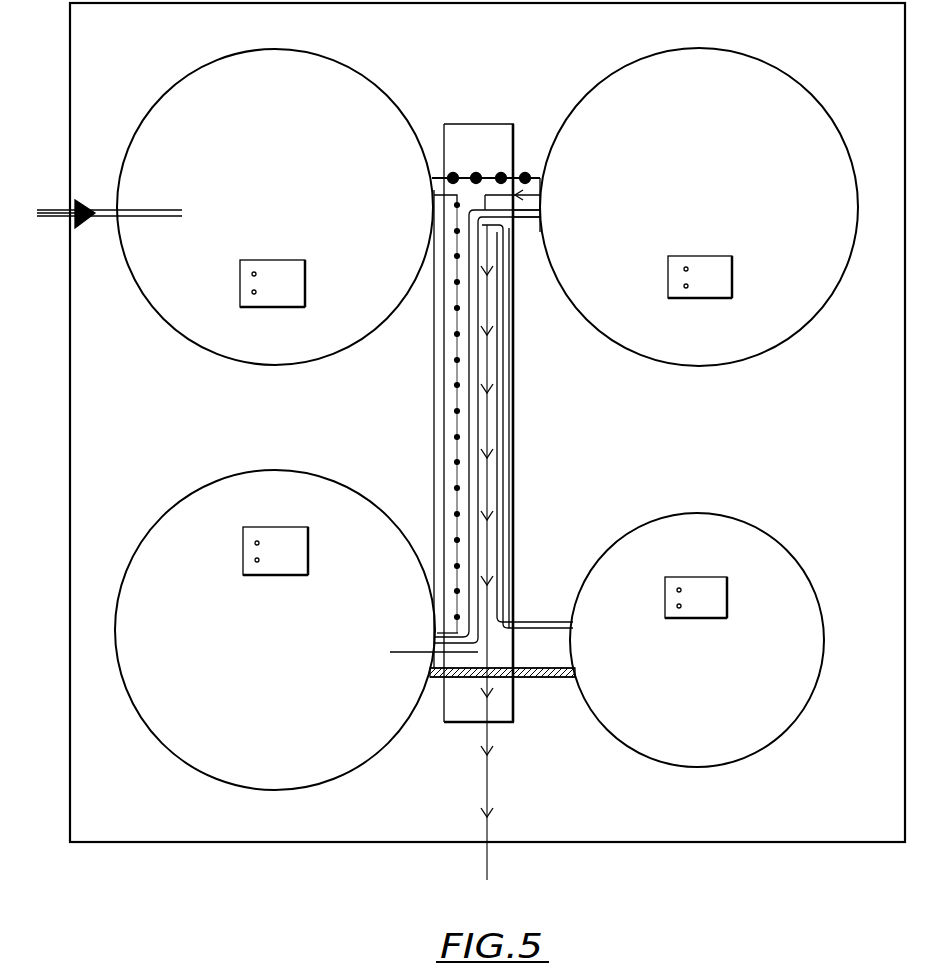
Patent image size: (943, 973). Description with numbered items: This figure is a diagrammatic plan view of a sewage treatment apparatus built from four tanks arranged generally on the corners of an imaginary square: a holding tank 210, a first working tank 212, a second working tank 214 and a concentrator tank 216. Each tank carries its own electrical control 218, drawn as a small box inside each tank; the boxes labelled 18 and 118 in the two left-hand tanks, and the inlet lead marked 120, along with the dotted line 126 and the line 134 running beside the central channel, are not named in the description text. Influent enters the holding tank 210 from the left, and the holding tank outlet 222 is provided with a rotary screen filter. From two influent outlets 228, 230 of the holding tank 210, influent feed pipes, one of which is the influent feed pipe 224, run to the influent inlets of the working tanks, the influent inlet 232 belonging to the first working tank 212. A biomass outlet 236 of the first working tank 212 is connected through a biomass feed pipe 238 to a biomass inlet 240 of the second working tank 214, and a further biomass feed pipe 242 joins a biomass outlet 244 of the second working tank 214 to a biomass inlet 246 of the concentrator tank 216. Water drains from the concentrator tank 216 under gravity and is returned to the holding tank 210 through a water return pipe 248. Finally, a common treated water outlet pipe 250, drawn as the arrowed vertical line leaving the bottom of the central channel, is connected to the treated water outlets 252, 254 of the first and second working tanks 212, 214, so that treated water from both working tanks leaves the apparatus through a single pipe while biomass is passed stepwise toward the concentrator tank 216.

The sensor 18 is at (300, 290).
The sensor 118 is at (300, 558).
The inlet conduit 120 is at (98, 218).
The dotted flow line 126 is at (457, 374).
The flow path 134 is at (437, 630).
The holding tank 210 is at (205, 352).
The first working tank 212 is at (782, 322).
The second working tank 214 is at (190, 758).
The concentrator tank 216 is at (770, 733).
The electrical control 218 is at (720, 275).
The outlet 222 is at (181, 208).
The influent feed pipe 224 is at (488, 190).
The influent outlet 228 is at (434, 192).
The influent outlet 230 is at (441, 176).
The influent inlet 232 is at (539, 176).
The biomass outlet 236 is at (527, 222).
The biomass feed pipe 238 is at (473, 422).
The biomass inlet 240 is at (435, 680).
The further biomass feed pipe 242 is at (540, 680).
The biomass outlet 244 is at (418, 672).
The biomass inlet 246 is at (567, 682).
The water return pipe 248 is at (502, 480).
The common treated water outlet pipe 250 is at (489, 796).
The treated water outlet 252 is at (540, 195).
The treated water outlet 254 is at (392, 652).